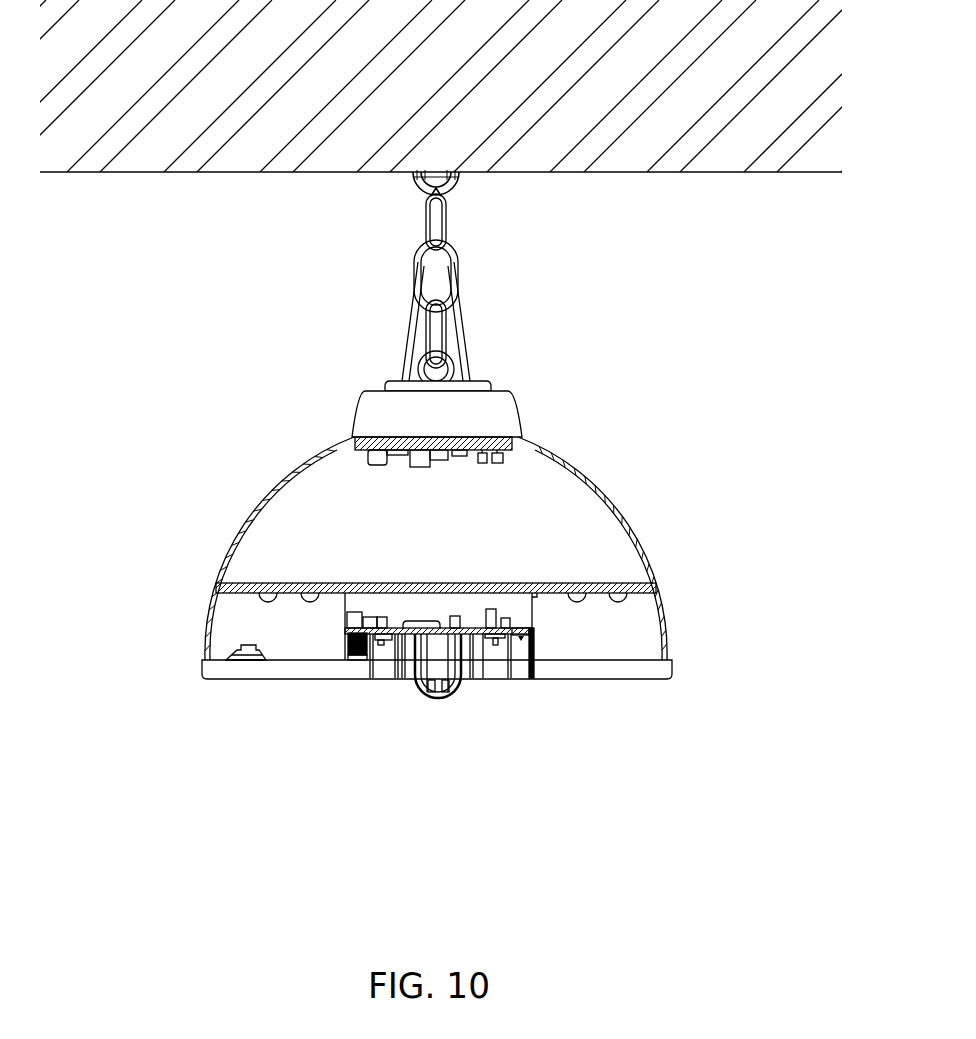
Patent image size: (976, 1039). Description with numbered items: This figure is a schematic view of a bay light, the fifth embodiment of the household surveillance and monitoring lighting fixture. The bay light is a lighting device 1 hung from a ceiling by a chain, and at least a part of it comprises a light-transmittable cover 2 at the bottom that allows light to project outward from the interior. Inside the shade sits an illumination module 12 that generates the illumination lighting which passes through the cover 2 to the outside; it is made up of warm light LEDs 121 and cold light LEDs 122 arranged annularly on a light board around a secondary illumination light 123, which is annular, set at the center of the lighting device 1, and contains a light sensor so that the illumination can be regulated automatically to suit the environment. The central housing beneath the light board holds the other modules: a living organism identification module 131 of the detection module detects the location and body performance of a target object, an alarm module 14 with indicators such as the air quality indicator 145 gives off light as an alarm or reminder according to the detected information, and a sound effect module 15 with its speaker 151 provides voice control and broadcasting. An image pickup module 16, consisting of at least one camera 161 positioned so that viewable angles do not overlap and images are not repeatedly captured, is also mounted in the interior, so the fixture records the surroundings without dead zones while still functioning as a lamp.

The lighting device 1 is at (318, 447).
The cover 2 is at (668, 681).
The illumination module 12 is at (227, 583).
The warm light LED 121 is at (313, 583).
The cold light LED 122 is at (268, 583).
The secondary illumination light 123 is at (377, 678).
The living organism identification module 131 is at (367, 656).
The alarm module 14 is at (528, 681).
The air quality indicator 145 is at (403, 678).
The sound effect module 15 is at (227, 646).
The speaker 151 is at (250, 679).
The image pickup module 16 is at (452, 644).
The camera 161 is at (463, 678).